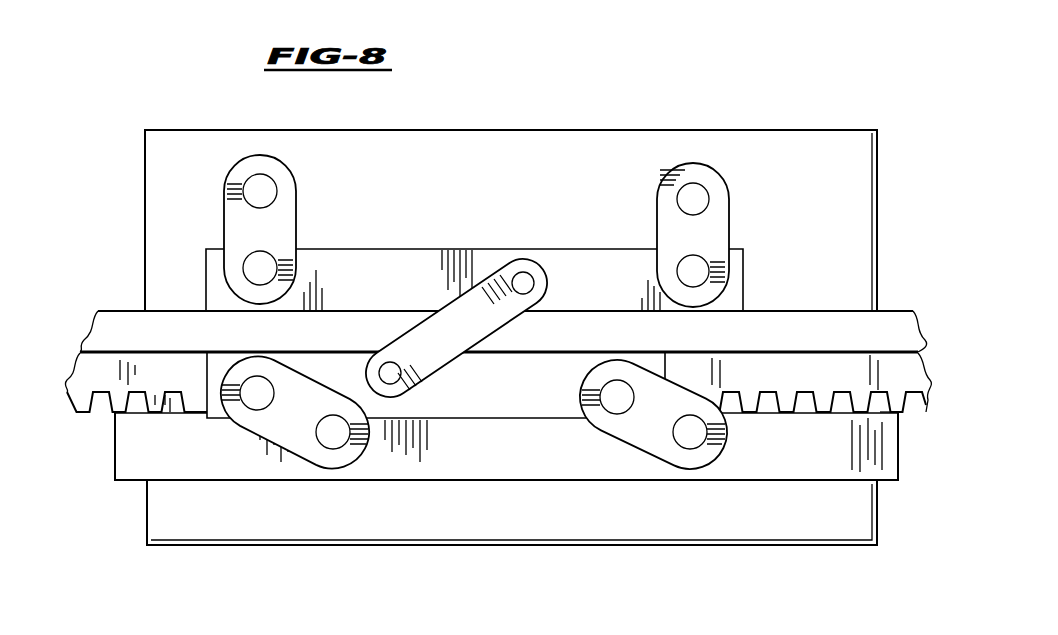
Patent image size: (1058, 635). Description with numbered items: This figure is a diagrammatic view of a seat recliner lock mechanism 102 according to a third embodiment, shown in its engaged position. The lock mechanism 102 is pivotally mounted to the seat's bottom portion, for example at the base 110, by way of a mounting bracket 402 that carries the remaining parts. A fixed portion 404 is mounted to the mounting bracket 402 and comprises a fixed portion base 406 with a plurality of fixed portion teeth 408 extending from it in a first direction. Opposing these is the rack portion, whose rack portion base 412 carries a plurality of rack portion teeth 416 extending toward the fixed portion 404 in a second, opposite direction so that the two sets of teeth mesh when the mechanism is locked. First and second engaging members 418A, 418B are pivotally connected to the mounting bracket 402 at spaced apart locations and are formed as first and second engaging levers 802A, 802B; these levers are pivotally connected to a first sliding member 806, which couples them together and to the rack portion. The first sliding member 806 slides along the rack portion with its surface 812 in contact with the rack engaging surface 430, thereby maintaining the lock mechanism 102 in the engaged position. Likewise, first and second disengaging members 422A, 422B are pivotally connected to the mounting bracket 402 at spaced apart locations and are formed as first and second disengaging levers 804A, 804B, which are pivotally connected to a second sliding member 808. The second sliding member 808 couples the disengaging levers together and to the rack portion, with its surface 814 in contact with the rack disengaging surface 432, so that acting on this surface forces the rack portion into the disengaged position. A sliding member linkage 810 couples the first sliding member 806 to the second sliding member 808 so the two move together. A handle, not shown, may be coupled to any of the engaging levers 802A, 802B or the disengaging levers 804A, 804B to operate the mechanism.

The lock mechanism 102 is at (554, 567).
The base 110 is at (78, 320).
The mounting bracket 402 is at (877, 128).
The fixed portion 404 is at (110, 472).
The fixed portion base 406 is at (888, 482).
The fixed portion teeth 408 is at (111, 419).
The rack portion base 412 is at (95, 317).
The rack portion teeth 416 is at (912, 422).
The first engaging member 418A is at (297, 179).
The second engaging member 418B is at (653, 170).
The first disengaging member 422A is at (258, 510).
The second disengaging member 422B is at (685, 552).
The rack engaging surface 430 is at (785, 310).
The rack disengaging surface 432 is at (783, 360).
The first engaging lever 802A is at (297, 188).
The second engaging lever 802B is at (653, 202).
The first disengaging lever 804A is at (288, 454).
The second disengaging lever 804B is at (612, 447).
The first sliding member 806 is at (420, 249).
The second sliding member 808 is at (410, 419).
The sliding member linkage 810 is at (430, 386).
The surface of the first sliding member 812 is at (352, 313).
The surface of the second sliding member 814 is at (548, 350).